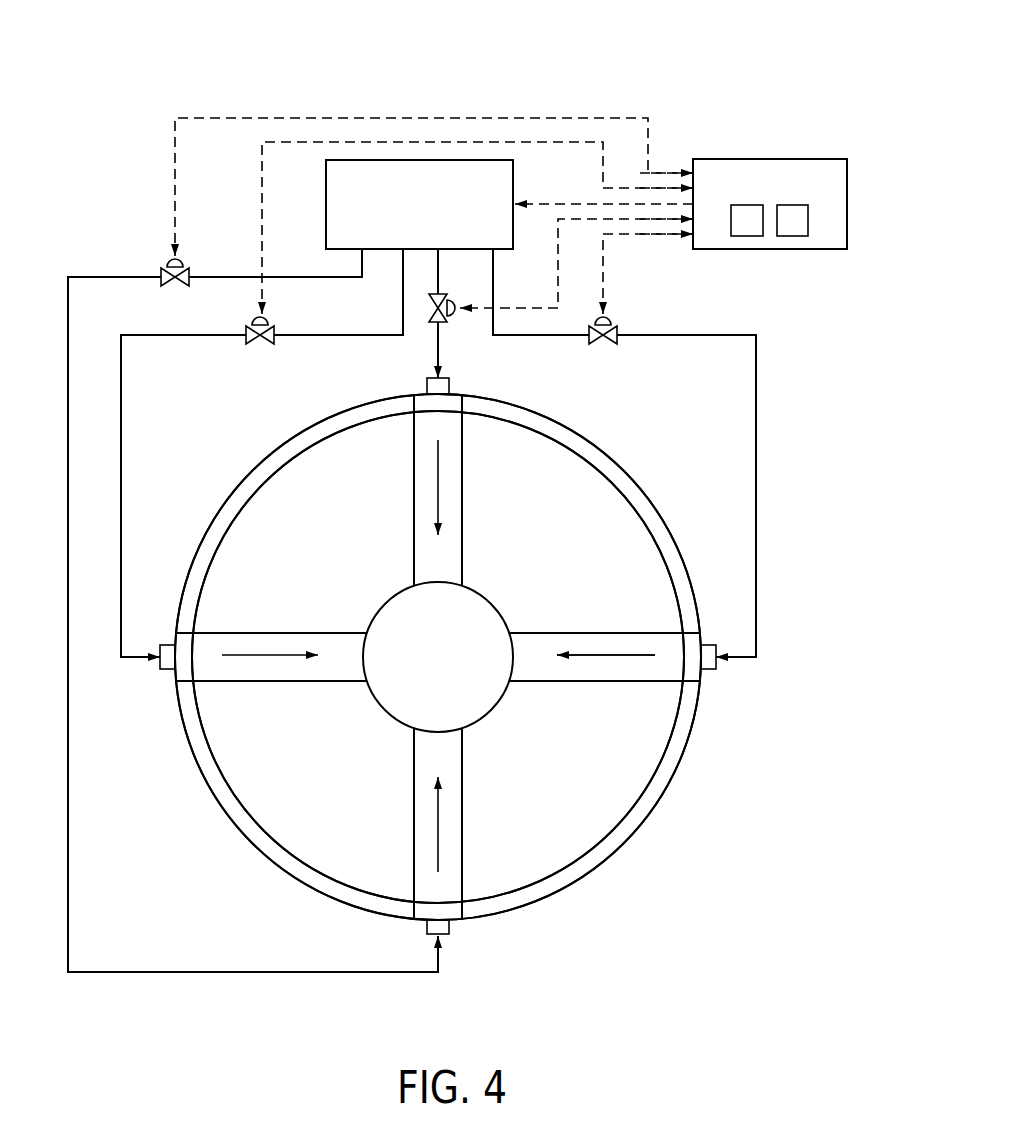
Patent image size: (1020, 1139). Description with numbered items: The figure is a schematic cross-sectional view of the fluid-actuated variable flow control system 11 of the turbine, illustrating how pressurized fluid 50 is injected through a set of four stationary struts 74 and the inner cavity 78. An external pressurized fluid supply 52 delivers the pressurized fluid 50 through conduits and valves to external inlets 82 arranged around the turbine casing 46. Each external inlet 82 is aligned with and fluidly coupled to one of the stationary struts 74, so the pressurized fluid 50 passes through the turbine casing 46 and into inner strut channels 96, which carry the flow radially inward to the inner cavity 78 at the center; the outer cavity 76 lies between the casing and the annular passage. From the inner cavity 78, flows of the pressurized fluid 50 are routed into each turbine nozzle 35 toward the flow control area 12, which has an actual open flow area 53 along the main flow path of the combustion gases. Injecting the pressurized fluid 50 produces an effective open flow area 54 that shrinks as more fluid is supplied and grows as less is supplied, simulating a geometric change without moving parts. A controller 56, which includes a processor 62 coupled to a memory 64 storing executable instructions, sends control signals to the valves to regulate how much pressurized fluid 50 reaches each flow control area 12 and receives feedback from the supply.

The fluid-actuated variable flow control system 11 is at (698, 42).
The fluid-actuated variable flow control area 12 is at (245, 755).
The turbine nozzle 35 is at (267, 785).
The turbine casing 46 is at (716, 768).
The pressurized fluid 50 is at (440, 272).
The external pressurized fluid supply 52 is at (418, 160).
The actual open flow area 53 is at (332, 473).
The effective open flow area 54 is at (439, 636).
The controller 56 is at (770, 159).
The processor 62 is at (745, 236).
The memory 64 is at (790, 236).
The stationary strut 74 is at (462, 522).
The outer cavity 76 is at (580, 870).
The inner cavity 78 is at (438, 657).
The external inlet 82 is at (449, 380).
The inner strut channel 96 is at (670, 650).